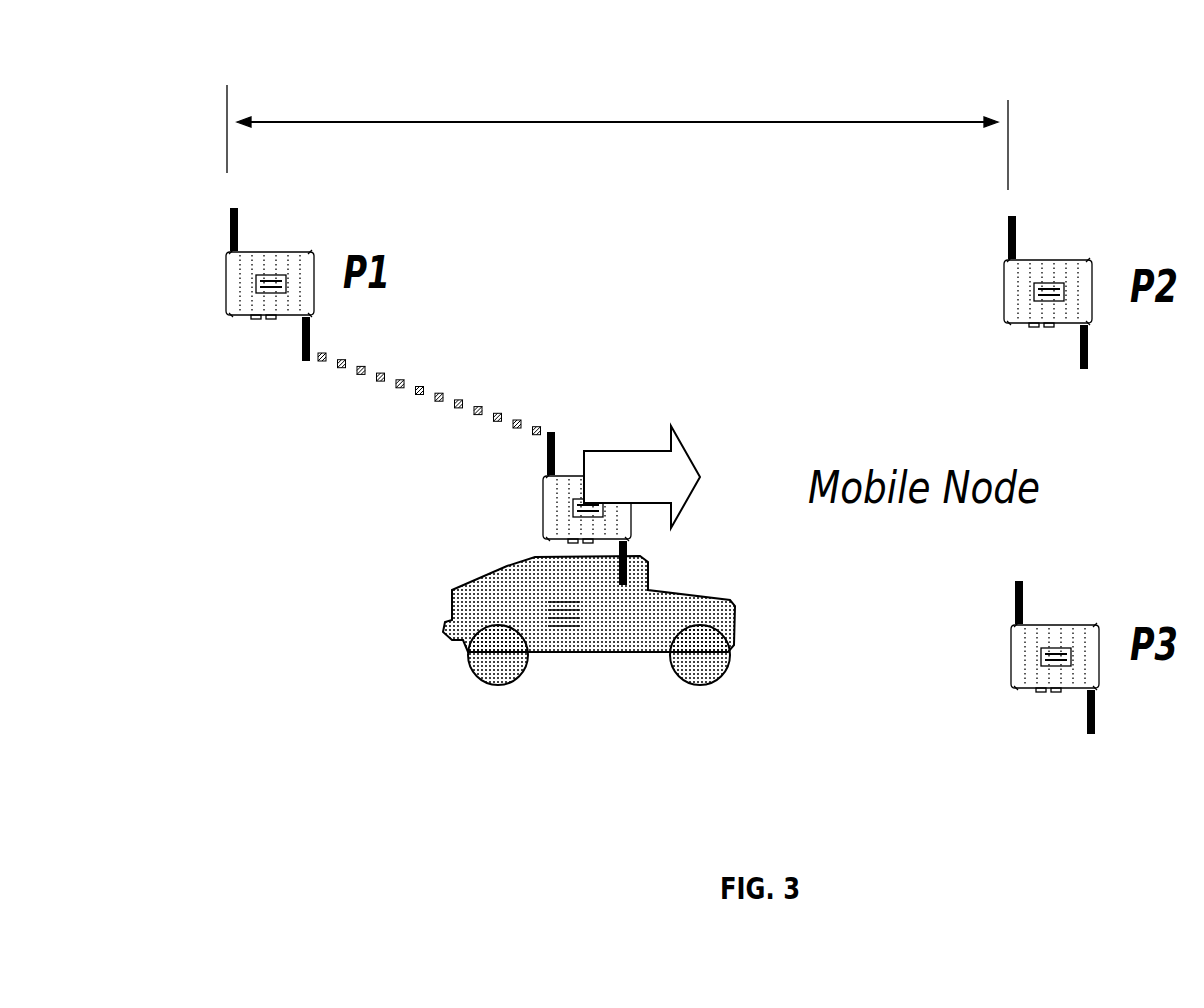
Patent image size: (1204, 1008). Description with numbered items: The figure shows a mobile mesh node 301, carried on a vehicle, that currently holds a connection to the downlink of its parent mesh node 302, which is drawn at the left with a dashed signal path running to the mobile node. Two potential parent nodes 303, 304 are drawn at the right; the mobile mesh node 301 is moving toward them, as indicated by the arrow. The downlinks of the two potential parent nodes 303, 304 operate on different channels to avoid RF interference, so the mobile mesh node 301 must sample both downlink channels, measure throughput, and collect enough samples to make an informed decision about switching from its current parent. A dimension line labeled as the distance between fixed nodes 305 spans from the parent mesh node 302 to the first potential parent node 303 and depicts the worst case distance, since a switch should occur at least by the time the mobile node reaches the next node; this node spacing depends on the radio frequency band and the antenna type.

The mobile mesh node 301 is at (553, 508).
The parent mesh node P1 302 is at (230, 284).
The potential parent node P2 303 is at (1015, 292).
The potential parent node P3 304 is at (1023, 657).
The worst case distance 305 is at (945, 73).